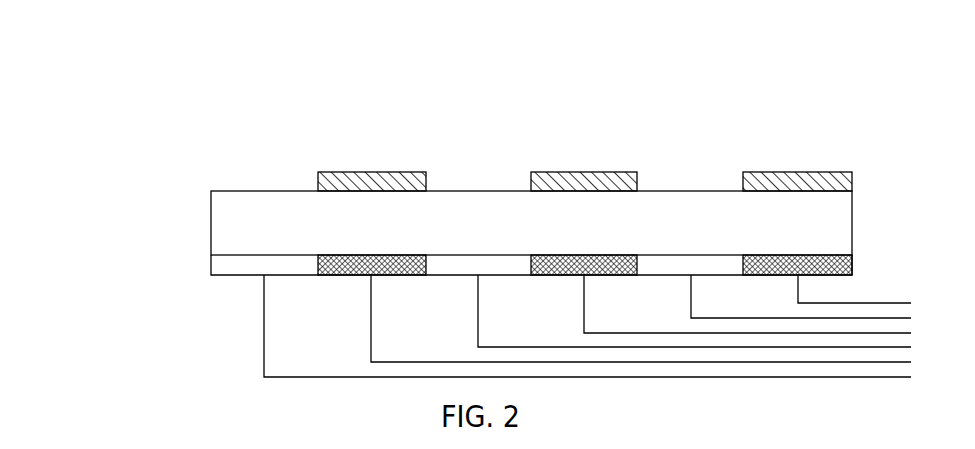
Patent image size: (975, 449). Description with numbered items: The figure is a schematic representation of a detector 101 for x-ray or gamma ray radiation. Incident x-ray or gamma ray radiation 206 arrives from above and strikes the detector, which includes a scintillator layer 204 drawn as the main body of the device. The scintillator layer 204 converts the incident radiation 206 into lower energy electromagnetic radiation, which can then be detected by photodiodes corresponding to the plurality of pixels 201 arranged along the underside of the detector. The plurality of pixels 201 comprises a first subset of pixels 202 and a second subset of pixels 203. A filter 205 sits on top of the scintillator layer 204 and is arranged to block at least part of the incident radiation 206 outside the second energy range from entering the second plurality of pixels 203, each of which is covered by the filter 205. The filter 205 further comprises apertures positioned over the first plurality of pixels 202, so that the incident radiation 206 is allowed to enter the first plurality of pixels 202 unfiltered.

The detector 101 is at (176, 129).
The plurality of pixels 201 is at (122, 275).
The first plurality of pixels 202 is at (224, 268).
The second plurality of pixels 203 is at (343, 268).
The scintillator layer 204 is at (211, 225).
The filter 205 is at (322, 173).
The incident x-ray or gamma ray radiation 206 is at (360, 17).